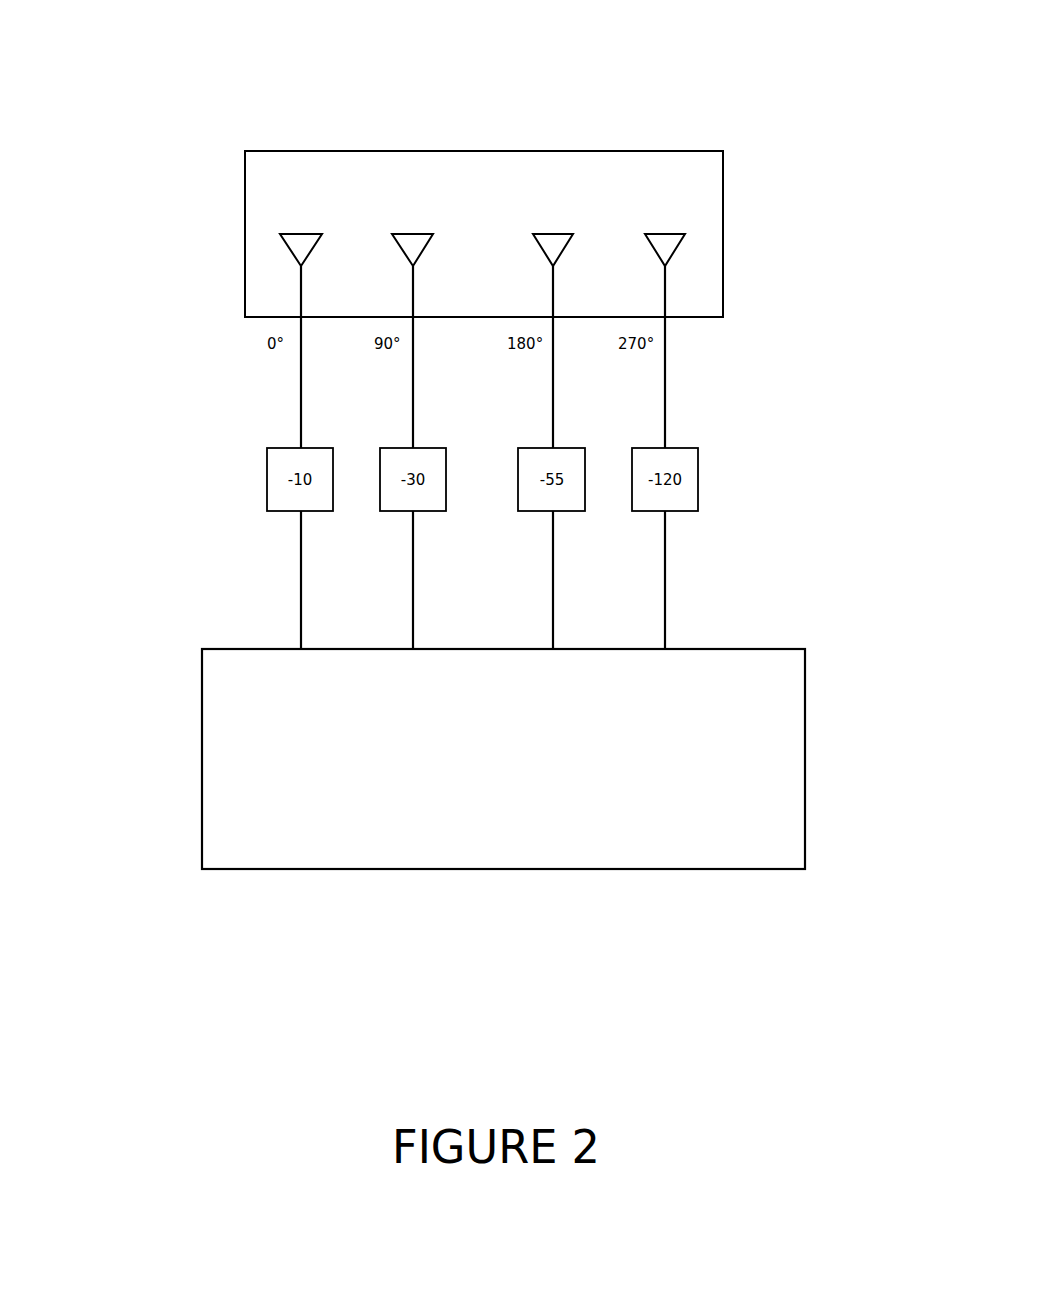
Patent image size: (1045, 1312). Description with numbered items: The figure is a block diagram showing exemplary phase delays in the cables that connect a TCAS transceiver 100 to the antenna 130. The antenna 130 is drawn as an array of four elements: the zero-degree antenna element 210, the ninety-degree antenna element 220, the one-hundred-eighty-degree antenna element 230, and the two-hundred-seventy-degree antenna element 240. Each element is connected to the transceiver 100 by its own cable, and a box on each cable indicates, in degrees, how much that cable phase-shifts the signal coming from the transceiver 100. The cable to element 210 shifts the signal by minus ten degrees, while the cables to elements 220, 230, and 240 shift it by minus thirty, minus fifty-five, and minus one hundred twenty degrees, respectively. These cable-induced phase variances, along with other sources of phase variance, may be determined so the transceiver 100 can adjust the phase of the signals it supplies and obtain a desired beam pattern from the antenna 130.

The TCAS transceiver 100 is at (438, 757).
The antenna 130 is at (484, 162).
The 0-degree antenna element 210 is at (280, 234).
The 90-degree antenna element 220 is at (392, 234).
The 180-degree antenna element 230 is at (533, 234).
The 270-degree antenna element 240 is at (683, 234).